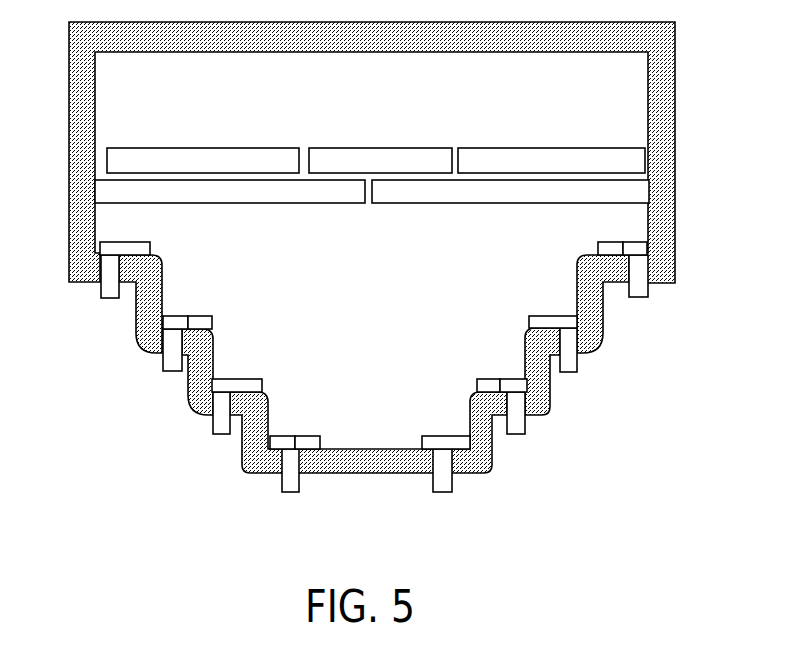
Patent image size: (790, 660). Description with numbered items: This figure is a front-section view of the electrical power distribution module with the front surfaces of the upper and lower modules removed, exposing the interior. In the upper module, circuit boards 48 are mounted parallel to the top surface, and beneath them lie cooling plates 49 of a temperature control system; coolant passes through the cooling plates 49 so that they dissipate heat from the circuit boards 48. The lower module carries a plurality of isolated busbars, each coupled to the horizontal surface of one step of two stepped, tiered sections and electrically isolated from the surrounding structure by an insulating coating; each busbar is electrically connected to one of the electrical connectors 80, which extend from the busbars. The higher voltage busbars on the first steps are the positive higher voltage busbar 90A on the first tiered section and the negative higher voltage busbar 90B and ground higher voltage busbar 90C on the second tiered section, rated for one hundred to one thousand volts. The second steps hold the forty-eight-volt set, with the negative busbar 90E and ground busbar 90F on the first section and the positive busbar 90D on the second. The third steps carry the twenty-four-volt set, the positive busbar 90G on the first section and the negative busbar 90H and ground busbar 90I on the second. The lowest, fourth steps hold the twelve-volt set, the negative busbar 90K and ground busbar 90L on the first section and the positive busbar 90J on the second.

The circuit boards 48 is at (253, 148).
The cooling plates 49 is at (297, 205).
The electrical connectors 80 is at (112, 300).
The positive higher voltage busbar 90A is at (150, 250).
The negative higher voltage busbar 90B is at (598, 248).
The ground higher voltage busbar 90C is at (647, 240).
The positive 48V busbar 90D is at (529, 318).
The negative 48V busbar 90E is at (172, 315).
The ground 48V busbar 90F is at (212, 323).
The positive 24V busbar 90G is at (262, 383).
The negative 24V busbar 90H is at (477, 385).
The ground 24V busbar 90I is at (513, 378).
The positive 12V busbar 90J is at (422, 440).
The negative 12V busbar 90K is at (282, 436).
The ground 12V busbar 90L is at (303, 450).